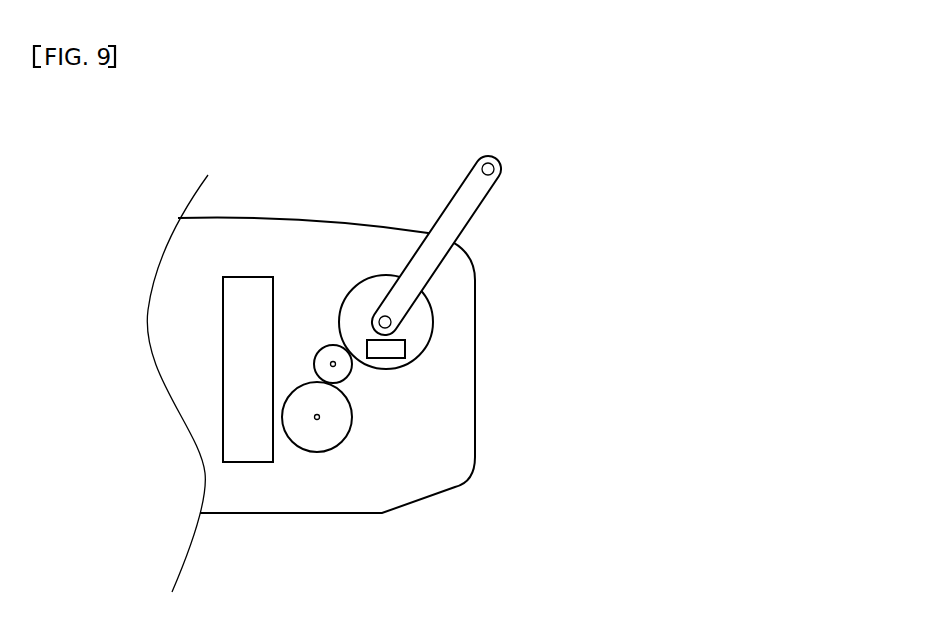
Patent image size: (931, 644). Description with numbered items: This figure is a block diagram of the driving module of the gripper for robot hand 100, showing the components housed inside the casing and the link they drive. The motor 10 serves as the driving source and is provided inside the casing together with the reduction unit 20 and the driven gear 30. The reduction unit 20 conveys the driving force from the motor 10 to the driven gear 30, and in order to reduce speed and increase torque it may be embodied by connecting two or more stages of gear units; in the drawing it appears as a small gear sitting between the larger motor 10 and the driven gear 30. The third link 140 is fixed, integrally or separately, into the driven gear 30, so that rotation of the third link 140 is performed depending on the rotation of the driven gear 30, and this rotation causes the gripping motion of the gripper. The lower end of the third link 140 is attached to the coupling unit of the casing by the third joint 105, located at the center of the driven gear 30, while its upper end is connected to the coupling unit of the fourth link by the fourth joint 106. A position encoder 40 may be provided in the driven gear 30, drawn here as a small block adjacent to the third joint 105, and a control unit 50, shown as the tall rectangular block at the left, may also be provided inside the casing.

The gripper for robot hand 100 is at (541, 132).
The fourth joint 106 is at (495, 170).
The third link 140 is at (470, 207).
The third joint 105 is at (392, 321).
The driven gear 30 is at (422, 357).
The reduction unit 20 is at (330, 345).
The motor 10 is at (320, 437).
The position encoder 40 is at (387, 350).
The control unit 50 is at (252, 443).